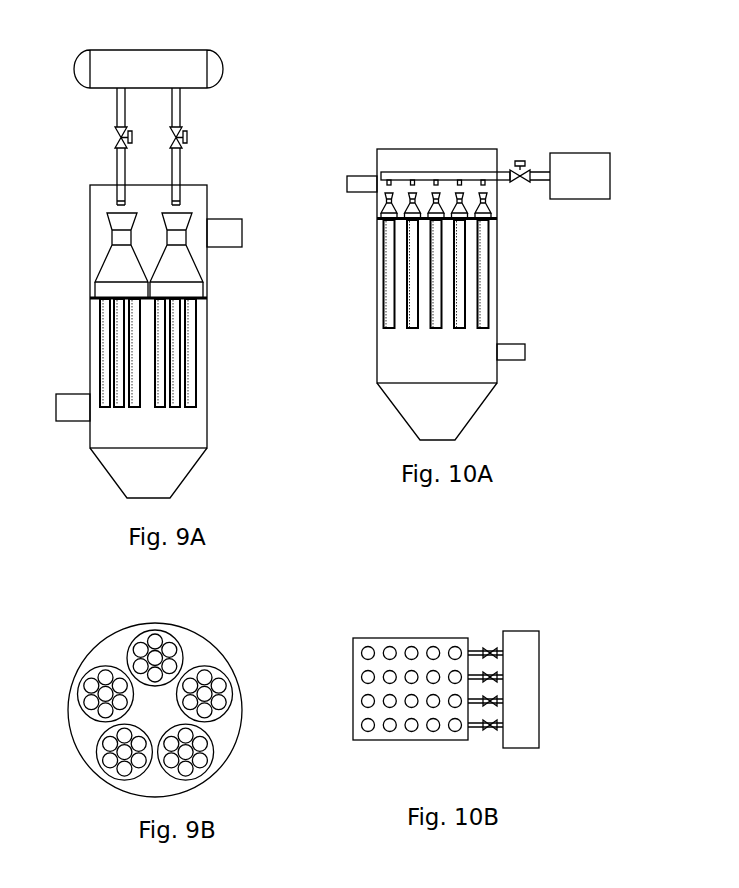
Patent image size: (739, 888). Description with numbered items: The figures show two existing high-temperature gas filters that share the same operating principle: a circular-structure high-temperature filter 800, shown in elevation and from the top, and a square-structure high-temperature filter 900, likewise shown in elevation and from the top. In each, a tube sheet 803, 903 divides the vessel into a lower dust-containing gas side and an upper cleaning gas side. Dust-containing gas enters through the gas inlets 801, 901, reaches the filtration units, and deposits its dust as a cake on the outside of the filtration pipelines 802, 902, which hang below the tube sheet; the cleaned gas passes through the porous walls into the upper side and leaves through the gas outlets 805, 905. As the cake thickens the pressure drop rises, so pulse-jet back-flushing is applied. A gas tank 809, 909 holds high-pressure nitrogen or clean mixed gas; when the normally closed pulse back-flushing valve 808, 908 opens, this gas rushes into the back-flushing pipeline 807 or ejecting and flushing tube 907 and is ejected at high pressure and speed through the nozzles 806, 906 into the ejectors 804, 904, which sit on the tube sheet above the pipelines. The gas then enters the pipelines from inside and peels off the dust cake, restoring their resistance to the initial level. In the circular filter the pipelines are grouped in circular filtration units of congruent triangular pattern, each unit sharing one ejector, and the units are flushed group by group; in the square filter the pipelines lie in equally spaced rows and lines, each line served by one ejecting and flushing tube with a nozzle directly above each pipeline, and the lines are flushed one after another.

In FIG. 9A, the high-temperature filter 800 is at (196, 254).
In FIG. 9A, the gas inlet 801 is at (72, 407).
In FIG. 9A, the filtration pipeline 802 is at (197, 378).
In FIG. 9B, the filtration pipeline 802 is at (220, 678).
In FIG. 9A, the tube sheet 803 is at (207, 298).
In FIG. 9B, the tube sheet 803 is at (227, 733).
In FIG. 9A, the ejector 804 is at (110, 273).
In FIG. 9B, the ejector 804 is at (118, 672).
In FIG. 9A, the gas outlet 805 is at (225, 233).
In FIG. 9A, the nozzle 806 is at (177, 202).
In FIG. 9A, the back-flushing pipeline 807 is at (122, 167).
In FIG. 9A, the pulse back-flushing valve 808 is at (187, 132).
In FIG. 9A, the gas tank 809 is at (178, 70).
In FIG. 10A, the high-temperature filter 900 is at (487, 230).
In FIG. 10A, the gas inlet 901 is at (510, 351).
In FIG. 10A, the filtration pipeline 902 is at (483, 296).
In FIG. 10B, the filtration pipeline 902 is at (455, 648).
In FIG. 10A, the tube sheet 903 is at (497, 220).
In FIG. 10B, the tube sheet 903 is at (390, 642).
In FIG. 10A, the ejector 904 is at (388, 210).
In FIG. 10A, the gas outlet 905 is at (368, 182).
In FIG. 10A, the nozzle 906 is at (487, 183).
In FIG. 10A, the ejecting and flushing tube 907 is at (443, 175).
In FIG. 10B, the ejecting and flushing tube 907 is at (477, 648).
In FIG. 10A, the pulse back-flushing valve 908 is at (523, 163).
In FIG. 10B, the pulse back-flushing valve 908 is at (490, 730).
In FIG. 10A, the gas tank 909 is at (582, 165).
In FIG. 10B, the gas tank 909 is at (523, 648).